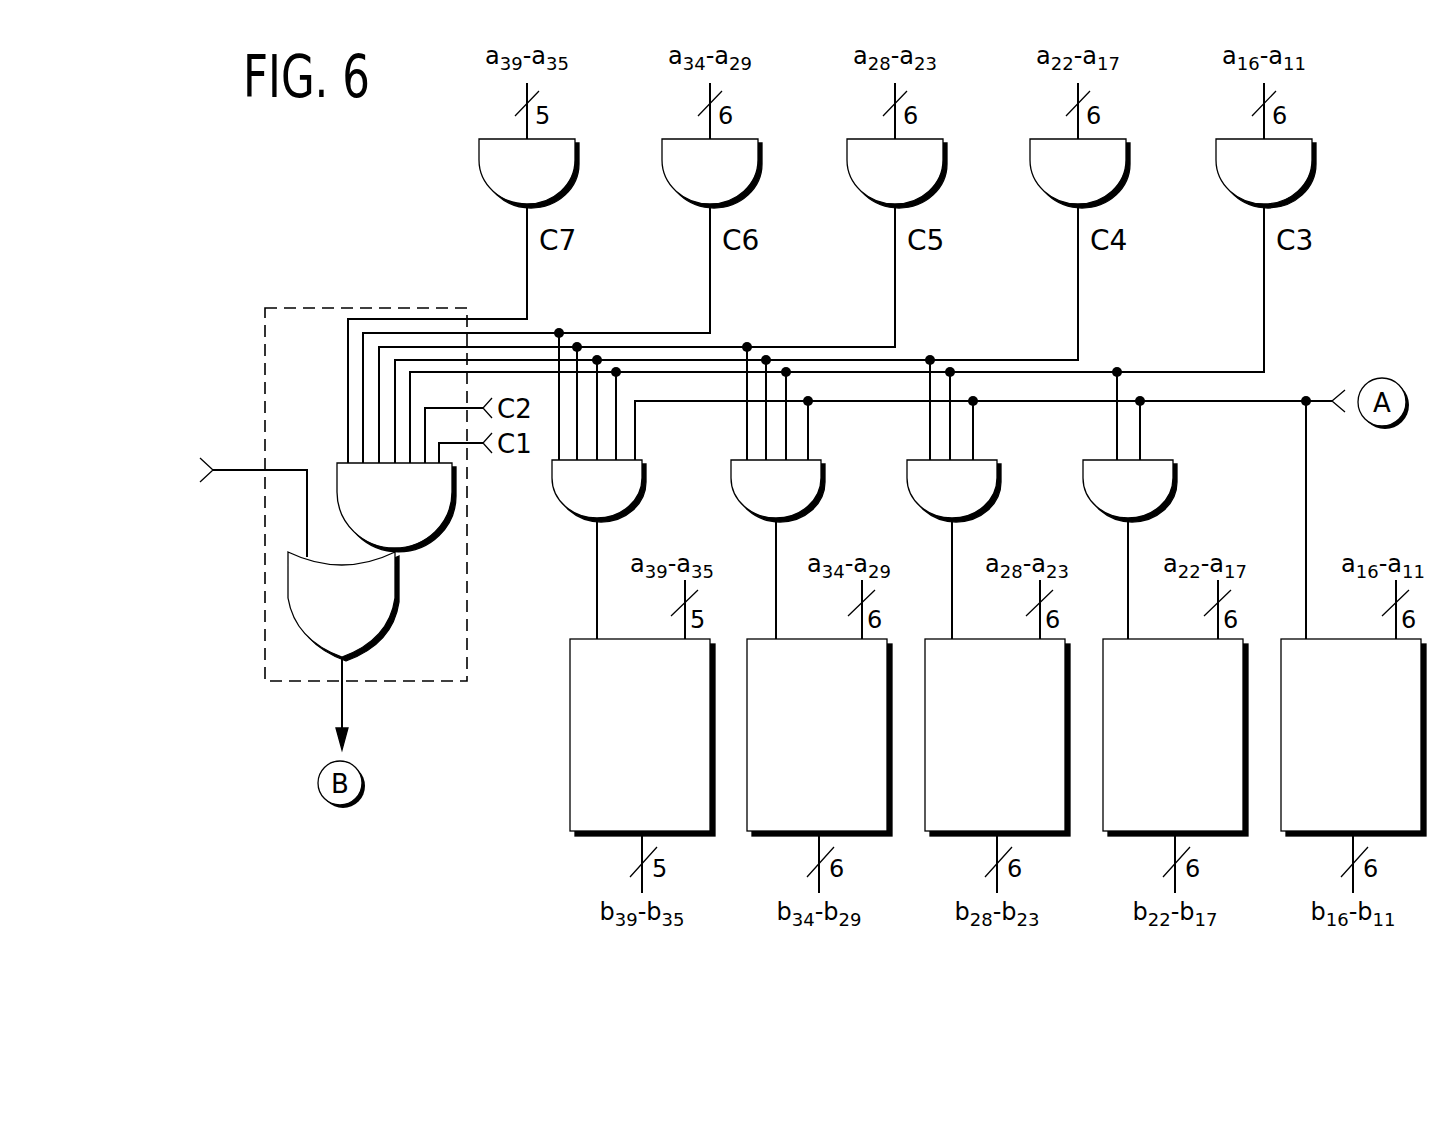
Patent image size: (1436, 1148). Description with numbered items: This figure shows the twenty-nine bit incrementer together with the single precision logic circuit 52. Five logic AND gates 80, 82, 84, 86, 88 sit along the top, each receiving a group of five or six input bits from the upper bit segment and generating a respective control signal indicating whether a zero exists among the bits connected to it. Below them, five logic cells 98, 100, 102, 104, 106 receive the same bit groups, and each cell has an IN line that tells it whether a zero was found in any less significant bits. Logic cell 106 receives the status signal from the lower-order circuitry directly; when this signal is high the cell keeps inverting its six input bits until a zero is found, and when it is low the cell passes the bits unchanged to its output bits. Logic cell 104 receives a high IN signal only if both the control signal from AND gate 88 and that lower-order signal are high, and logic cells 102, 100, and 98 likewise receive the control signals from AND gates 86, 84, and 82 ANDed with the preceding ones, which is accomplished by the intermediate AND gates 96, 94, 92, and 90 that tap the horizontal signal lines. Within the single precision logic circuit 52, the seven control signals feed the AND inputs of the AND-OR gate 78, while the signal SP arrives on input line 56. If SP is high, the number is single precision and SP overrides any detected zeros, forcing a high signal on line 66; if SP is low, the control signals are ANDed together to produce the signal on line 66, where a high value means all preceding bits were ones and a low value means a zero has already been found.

The single precision logic circuit 52 is at (312, 359).
The input line 56 is at (240, 474).
The interconnection 66 is at (340, 724).
The AND-OR gate 78 is at (327, 614).
The logic AND gate 80 is at (513, 178).
The logic AND gate 82 is at (696, 178).
The logic AND gate 84 is at (881, 178).
The logic AND gate 86 is at (1064, 178).
The logic AND gate 88 is at (1250, 178).
The AND gate 90 is at (583, 498).
The AND gate 92 is at (762, 498).
The AND gate 94 is at (938, 498).
The AND gate 96 is at (1114, 498).
The logic cell 98 is at (626, 790).
The logic cell 100 is at (796, 790).
The logic cell 102 is at (974, 790).
The logic cell 104 is at (1152, 790).
The logic cell 106 is at (1330, 790).